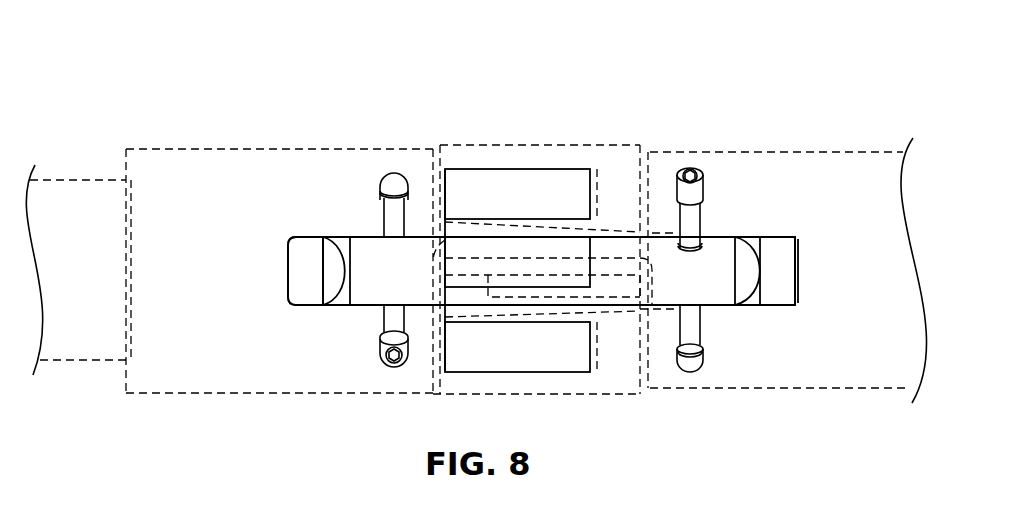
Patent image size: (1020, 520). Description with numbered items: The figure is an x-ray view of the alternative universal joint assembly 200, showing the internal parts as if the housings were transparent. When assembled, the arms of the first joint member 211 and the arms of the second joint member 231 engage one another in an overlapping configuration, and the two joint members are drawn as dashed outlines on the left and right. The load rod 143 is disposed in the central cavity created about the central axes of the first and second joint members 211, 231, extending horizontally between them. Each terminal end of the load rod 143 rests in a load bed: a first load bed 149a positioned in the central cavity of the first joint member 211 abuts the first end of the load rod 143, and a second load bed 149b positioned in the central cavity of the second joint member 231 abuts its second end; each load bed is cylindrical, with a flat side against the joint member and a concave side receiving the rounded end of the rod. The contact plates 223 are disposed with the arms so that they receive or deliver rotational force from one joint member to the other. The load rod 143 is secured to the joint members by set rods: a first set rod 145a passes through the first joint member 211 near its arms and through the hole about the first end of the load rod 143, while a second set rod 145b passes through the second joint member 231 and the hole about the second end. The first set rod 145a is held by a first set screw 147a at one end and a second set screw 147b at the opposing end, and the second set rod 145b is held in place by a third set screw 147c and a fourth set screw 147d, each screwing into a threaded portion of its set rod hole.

The alternative universal joint assembly 200 is at (134, 54).
The first joint member 211 is at (187, 170).
The second joint member 231 is at (840, 172).
The contact plates 223 is at (498, 185).
The load rod 143 is at (378, 245).
The first load bed 149a is at (305, 250).
The second load bed 149b is at (775, 295).
The first set screw 147a is at (393, 182).
The second set screw 147b is at (378, 345).
The third set screw 147c is at (705, 190).
The fourth set screw 147d is at (688, 362).
The first set rod 145a is at (390, 208).
The second set rod 145b is at (697, 222).